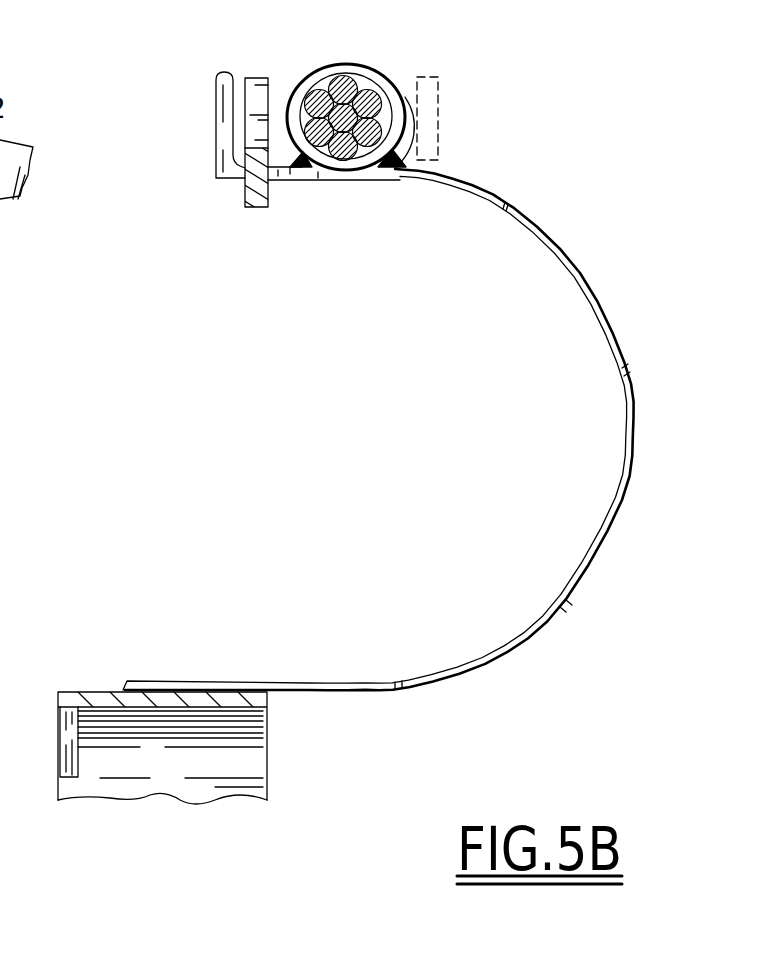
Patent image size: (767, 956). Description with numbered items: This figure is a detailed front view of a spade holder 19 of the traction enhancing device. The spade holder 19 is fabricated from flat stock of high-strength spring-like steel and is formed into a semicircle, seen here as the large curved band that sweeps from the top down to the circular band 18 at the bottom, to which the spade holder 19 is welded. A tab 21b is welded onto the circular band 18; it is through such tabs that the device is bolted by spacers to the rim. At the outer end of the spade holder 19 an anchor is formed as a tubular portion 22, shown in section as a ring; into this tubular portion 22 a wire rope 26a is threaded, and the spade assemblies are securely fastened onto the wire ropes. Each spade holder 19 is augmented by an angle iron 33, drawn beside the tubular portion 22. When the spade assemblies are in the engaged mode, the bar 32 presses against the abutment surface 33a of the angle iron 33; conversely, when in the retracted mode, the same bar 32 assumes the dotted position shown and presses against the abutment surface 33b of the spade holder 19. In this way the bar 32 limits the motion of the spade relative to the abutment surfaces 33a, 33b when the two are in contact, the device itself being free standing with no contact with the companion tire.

The spade holder 19 is at (600, 293).
The circular band 18 is at (245, 710).
The tab 21b is at (58, 745).
The tubular portion 22 is at (335, 67).
The wire rope 26a is at (352, 67).
The bar 32 is at (246, 79).
The angle iron 33 is at (217, 153).
The abutment surface 33a is at (292, 180).
The abutment surface 33b is at (438, 179).